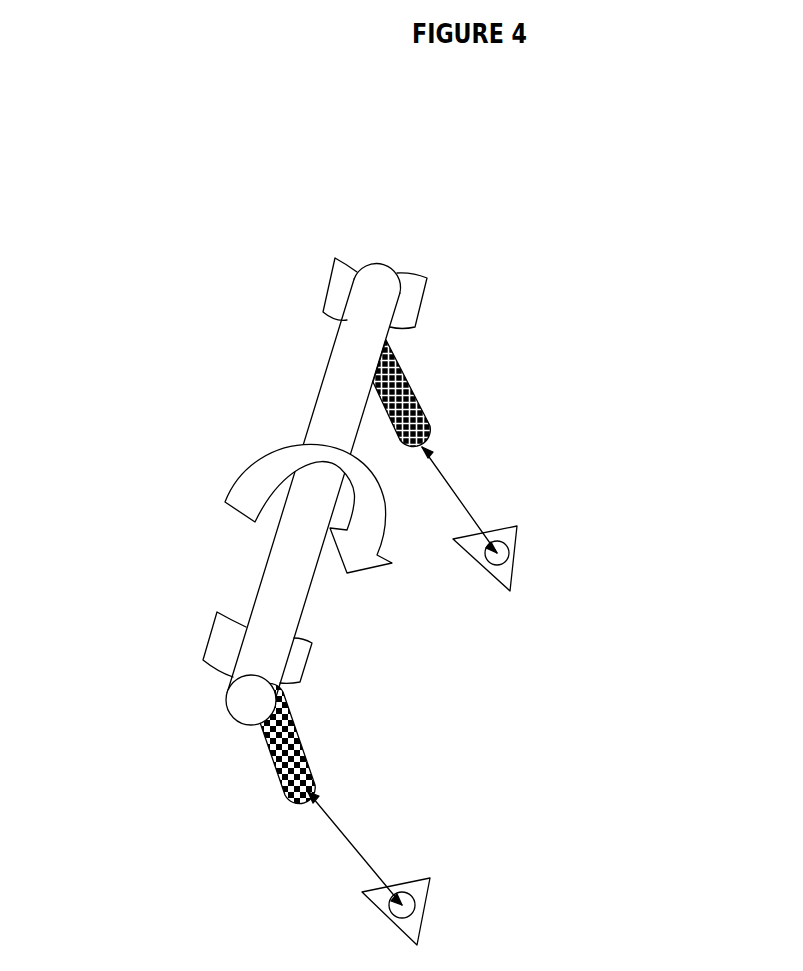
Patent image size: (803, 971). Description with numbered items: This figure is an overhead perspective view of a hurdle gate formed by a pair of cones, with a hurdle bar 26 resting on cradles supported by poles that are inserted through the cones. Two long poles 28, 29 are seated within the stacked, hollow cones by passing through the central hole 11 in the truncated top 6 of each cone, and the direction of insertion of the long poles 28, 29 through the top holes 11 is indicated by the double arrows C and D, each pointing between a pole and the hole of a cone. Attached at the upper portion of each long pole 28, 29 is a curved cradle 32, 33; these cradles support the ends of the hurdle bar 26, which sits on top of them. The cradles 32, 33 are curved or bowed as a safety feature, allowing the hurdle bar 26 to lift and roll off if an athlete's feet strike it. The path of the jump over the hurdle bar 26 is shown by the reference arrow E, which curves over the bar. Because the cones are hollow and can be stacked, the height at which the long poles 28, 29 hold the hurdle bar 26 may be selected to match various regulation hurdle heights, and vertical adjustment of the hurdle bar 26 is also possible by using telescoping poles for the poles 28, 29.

The hurdle bar 26 is at (441, 504).
The long pole 28 is at (420, 406).
The long pole 29 is at (292, 718).
The curved cradle 32 is at (325, 292).
The curved cradle 33 is at (210, 640).
The truncated top 6 is at (553, 514).
The central hole 11 is at (515, 557).
The double arrow C is at (460, 495).
The double arrow D is at (355, 845).
The reference arrow E is at (363, 568).